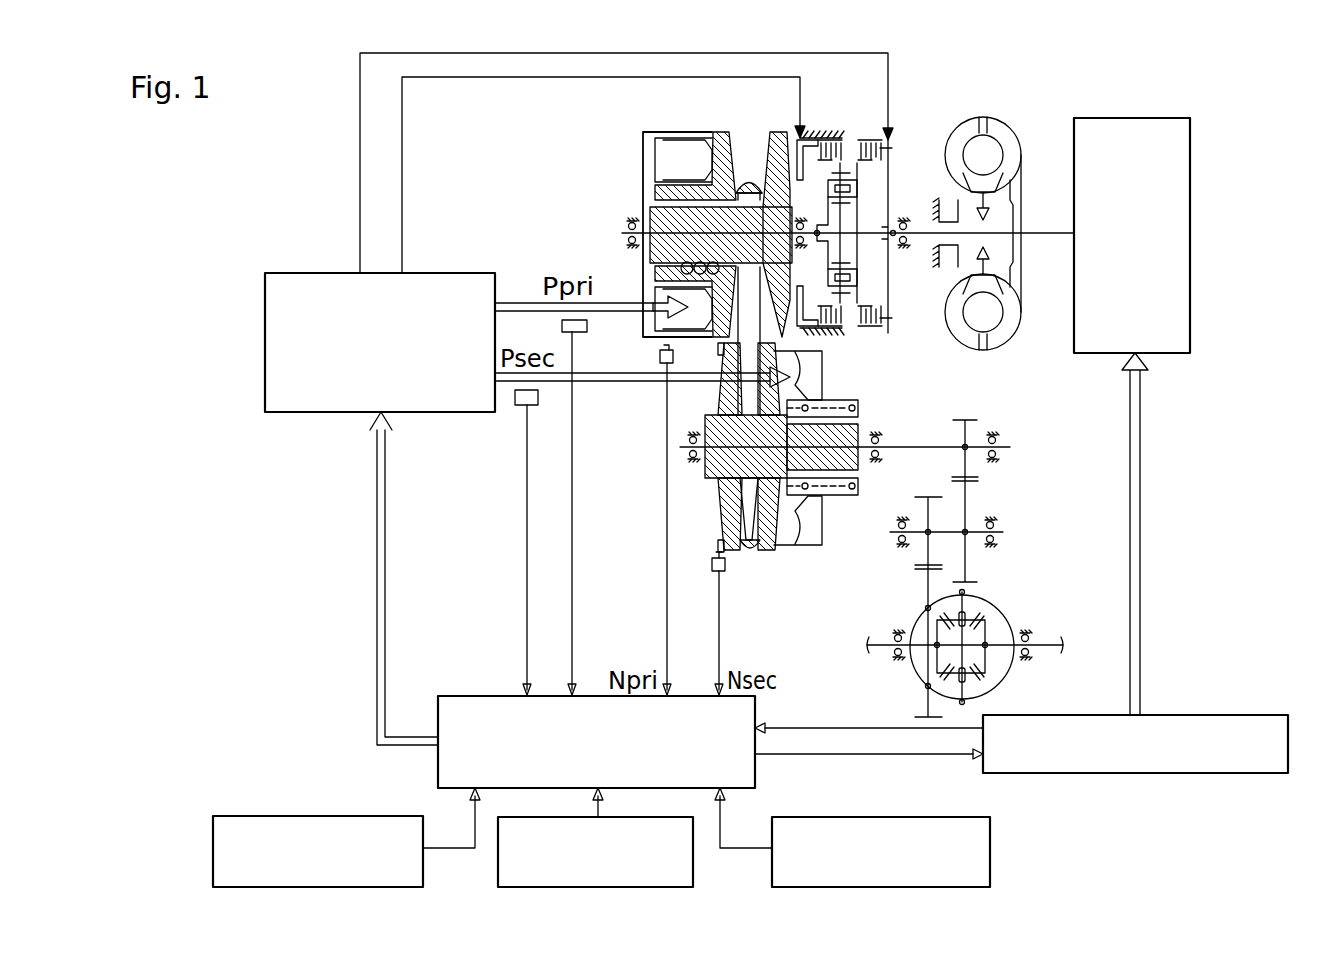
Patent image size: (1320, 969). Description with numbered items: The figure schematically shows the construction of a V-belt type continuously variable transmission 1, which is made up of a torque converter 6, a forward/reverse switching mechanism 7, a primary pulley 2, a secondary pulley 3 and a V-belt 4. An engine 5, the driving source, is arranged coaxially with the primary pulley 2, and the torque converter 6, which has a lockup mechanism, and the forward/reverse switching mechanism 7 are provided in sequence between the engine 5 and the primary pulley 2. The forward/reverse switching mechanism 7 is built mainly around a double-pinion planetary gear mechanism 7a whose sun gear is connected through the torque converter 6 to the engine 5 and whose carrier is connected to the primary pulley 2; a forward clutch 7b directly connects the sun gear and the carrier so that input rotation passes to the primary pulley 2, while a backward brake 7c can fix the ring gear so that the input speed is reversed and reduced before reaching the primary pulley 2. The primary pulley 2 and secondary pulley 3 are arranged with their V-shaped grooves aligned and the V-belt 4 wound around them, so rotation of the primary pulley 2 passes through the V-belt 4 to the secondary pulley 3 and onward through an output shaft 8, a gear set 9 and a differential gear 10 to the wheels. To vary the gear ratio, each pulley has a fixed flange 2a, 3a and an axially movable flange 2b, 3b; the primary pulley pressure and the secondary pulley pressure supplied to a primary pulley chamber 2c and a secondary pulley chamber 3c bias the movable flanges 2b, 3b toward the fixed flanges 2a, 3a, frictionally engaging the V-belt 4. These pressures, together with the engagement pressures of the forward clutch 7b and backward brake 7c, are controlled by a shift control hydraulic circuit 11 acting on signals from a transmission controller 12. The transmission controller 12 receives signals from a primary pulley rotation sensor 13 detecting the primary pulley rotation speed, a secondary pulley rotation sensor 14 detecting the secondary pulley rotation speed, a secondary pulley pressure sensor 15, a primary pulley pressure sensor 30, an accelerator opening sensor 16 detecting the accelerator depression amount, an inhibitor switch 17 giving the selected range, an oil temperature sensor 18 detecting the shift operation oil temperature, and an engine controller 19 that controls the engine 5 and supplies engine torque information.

The V-belt type continuously variable transmission 1 is at (665, 128).
The primary pulley 2 is at (767, 150).
The fixed flange 2a is at (786, 132).
The movable flange 2b is at (724, 132).
The primary pulley chamber 2c is at (665, 162).
The secondary pulley 3 is at (805, 544).
The fixed flange 3a is at (730, 512).
The movable flange 3b is at (768, 550).
The secondary pulley chamber 3c is at (790, 542).
The V-belt 4 is at (745, 186).
The engine 5 is at (1190, 187).
The torque converter 6 is at (1020, 119).
The forward/reverse switching mechanism 7 is at (814, 124).
The double-pinion planetary gear mechanism 7a is at (858, 186).
The forward clutch 7b is at (864, 138).
The backward brake 7c is at (827, 138).
The output shaft 8 is at (905, 442).
The gear set 9 is at (1008, 523).
The differential gear 10 is at (1005, 594).
The shift control hydraulic circuit 11 is at (326, 273).
The transmission controller 12 is at (438, 703).
The primary pulley rotation sensor 13 is at (662, 363).
The secondary pulley rotation sensor 14 is at (714, 572).
The secondary pulley pressure sensor 15 is at (518, 405).
The accelerator opening sensor 16 is at (270, 816).
The inhibitor switch 17 is at (693, 850).
The oil temperature sensor 18 is at (990, 848).
The engine controller 19 is at (1250, 715).
The primary pulley pressure sensor 30 is at (588, 328).